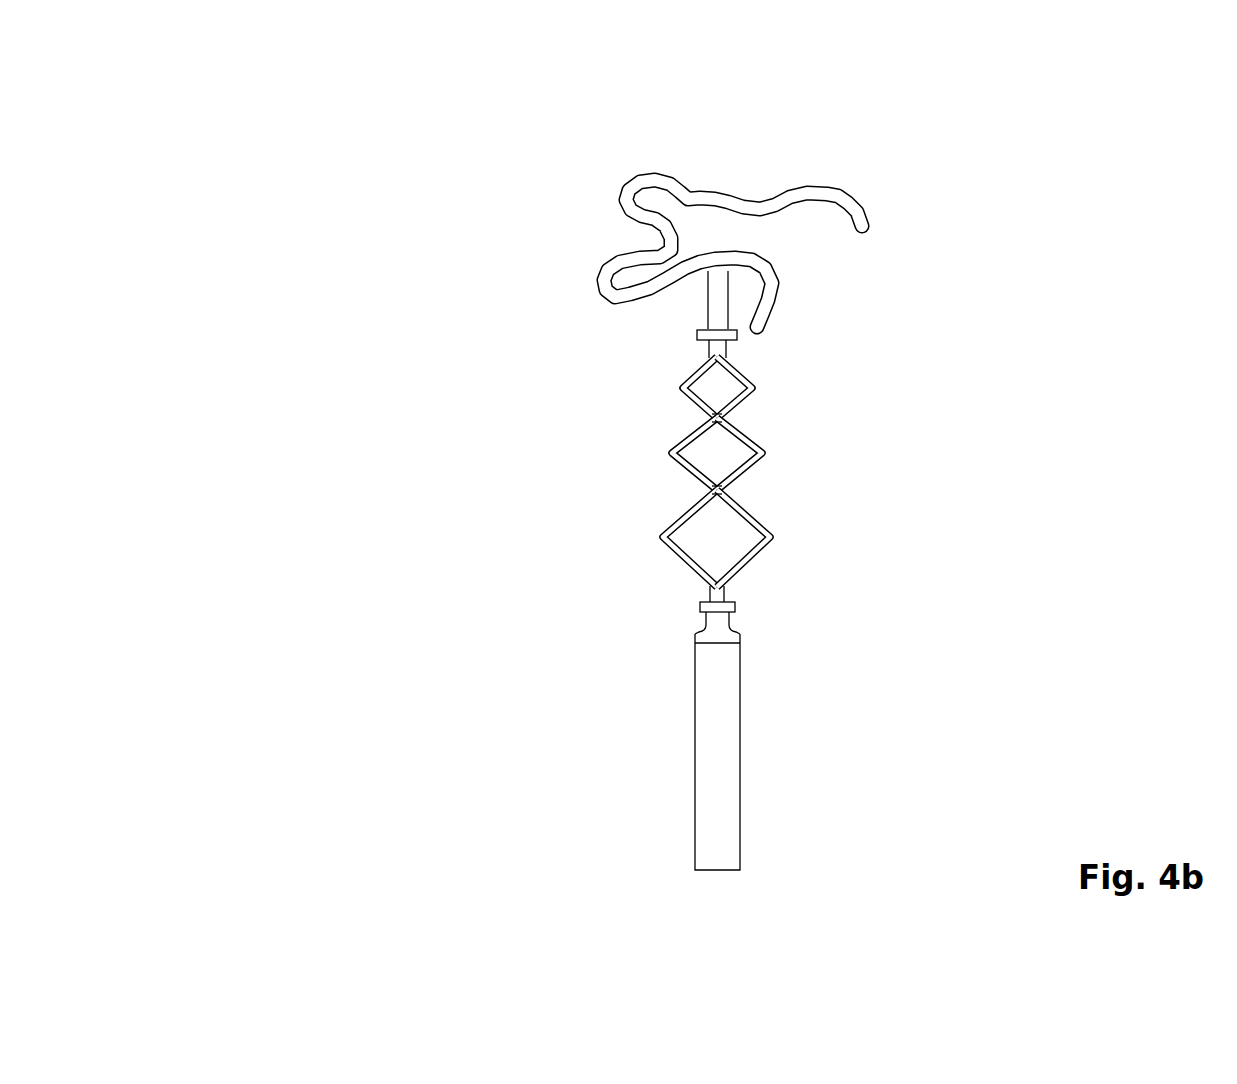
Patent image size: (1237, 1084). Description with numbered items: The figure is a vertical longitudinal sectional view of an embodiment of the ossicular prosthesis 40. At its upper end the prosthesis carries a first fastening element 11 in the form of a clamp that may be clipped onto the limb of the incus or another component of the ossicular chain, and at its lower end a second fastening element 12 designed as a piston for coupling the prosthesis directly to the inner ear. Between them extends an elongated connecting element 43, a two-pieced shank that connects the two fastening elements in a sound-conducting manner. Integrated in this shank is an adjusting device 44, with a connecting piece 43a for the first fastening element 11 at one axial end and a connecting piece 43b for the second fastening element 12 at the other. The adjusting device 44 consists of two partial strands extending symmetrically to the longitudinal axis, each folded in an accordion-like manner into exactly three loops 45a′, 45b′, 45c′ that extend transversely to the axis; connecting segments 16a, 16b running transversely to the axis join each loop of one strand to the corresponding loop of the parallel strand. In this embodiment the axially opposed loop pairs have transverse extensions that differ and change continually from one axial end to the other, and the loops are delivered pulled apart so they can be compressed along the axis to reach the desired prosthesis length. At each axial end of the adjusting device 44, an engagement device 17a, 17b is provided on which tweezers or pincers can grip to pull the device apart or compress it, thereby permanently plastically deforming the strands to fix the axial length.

The ossicular prosthesis 40 is at (661, 474).
The first fastening element 11 is at (782, 222).
The elongated connecting element 43 is at (280, 267).
The connecting piece 43a is at (513, 314).
The engagement device 17a is at (551, 344).
The adjusting device 44 is at (484, 365).
The loop 45a′ is at (564, 368).
The loop 45b′ is at (564, 408).
The loop 45c′ is at (564, 454).
The connecting segment 16a is at (862, 364).
The connecting segment 16b is at (861, 523).
The engagement device 17b is at (554, 560).
The connecting piece 43b is at (520, 595).
The second fastening element 12 is at (611, 752).